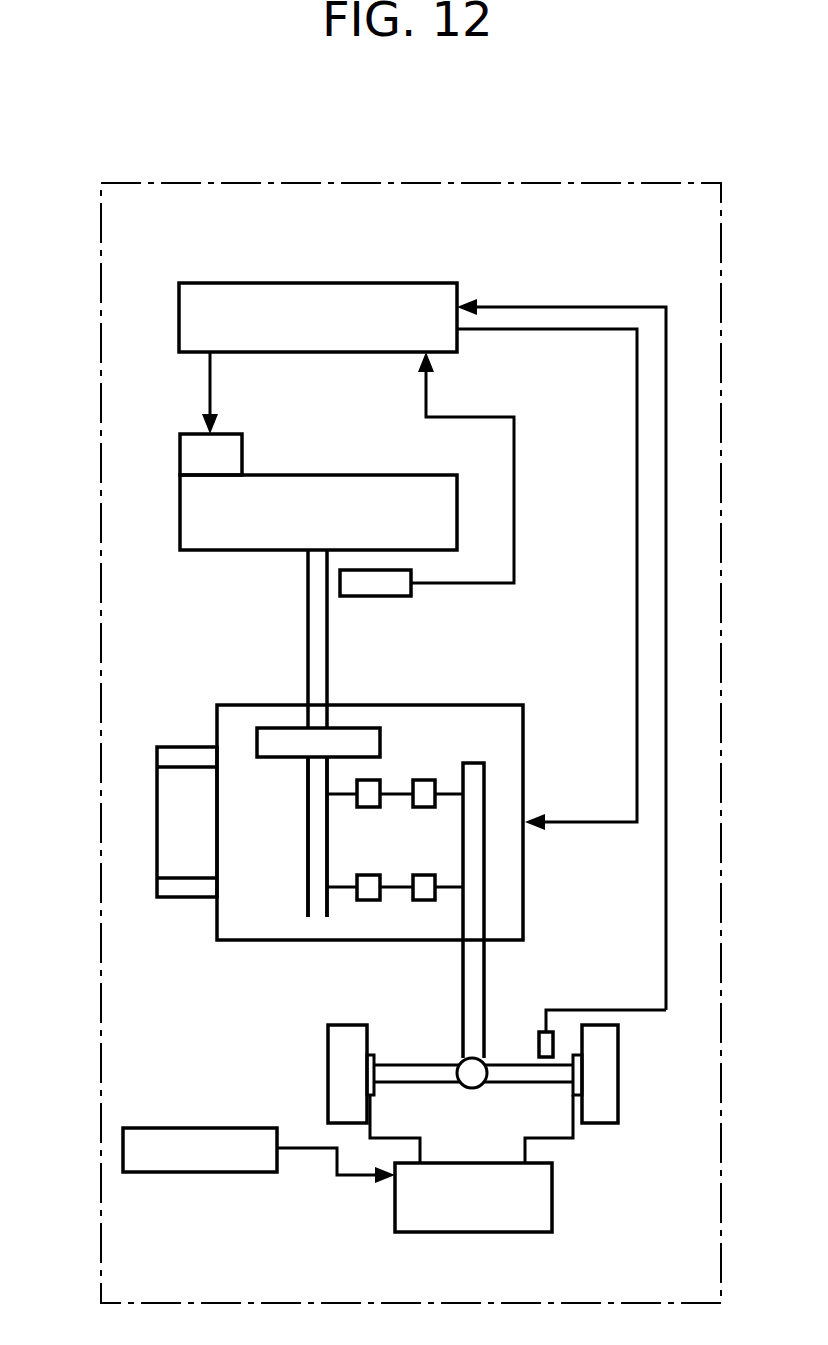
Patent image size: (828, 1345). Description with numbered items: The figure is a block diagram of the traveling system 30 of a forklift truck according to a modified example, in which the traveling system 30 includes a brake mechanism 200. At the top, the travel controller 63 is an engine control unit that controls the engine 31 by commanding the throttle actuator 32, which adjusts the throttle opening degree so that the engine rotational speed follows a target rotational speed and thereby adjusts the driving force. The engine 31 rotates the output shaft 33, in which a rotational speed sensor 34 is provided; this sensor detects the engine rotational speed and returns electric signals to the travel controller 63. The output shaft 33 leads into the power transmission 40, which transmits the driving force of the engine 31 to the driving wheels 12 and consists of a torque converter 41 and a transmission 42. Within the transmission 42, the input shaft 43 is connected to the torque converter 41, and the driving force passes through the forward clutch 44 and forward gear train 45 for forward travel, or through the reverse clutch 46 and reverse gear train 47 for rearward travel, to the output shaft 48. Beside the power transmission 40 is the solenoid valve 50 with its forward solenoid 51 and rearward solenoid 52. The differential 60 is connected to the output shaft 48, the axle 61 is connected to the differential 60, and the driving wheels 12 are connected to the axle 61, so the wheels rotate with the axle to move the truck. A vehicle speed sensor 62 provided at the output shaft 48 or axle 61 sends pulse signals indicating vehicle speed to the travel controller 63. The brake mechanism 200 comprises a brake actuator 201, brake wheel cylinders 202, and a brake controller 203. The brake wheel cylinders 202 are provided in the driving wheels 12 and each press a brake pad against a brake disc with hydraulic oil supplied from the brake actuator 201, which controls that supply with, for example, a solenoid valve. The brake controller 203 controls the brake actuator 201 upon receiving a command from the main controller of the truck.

The traveling system 30 is at (668, 183).
The travel controller 63 is at (400, 283).
The throttle actuator 32 is at (242, 460).
The engine 31 is at (395, 475).
The rotational speed sensor 34 is at (411, 590).
The output shaft 33 is at (308, 615).
The power transmission 40 is at (525, 740).
The torque converter 41 is at (282, 728).
The input shaft 43 is at (308, 832).
The forward clutch 44 is at (392, 780).
The forward gear train 45 is at (424, 780).
The reverse clutch 46 is at (368, 900).
The reverse gear train 47 is at (424, 900).
The output shaft 48 is at (484, 968).
The transmission 42 is at (511, 854).
The vehicle speed sensor 62 is at (533, 1047).
The solenoid valve 50 is at (157, 853).
The forward solenoid 51 is at (190, 747).
The rearward solenoid 52 is at (190, 897).
The differential 60 is at (485, 1085).
The brake wheel cylinders 202 is at (380, 1055).
The driving wheels 12 is at (328, 1088).
The axle 61 is at (420, 1073).
The brake actuator 201 is at (395, 1212).
The brake controller 203 is at (178, 1128).
The brake mechanism 200 is at (619, 1168).